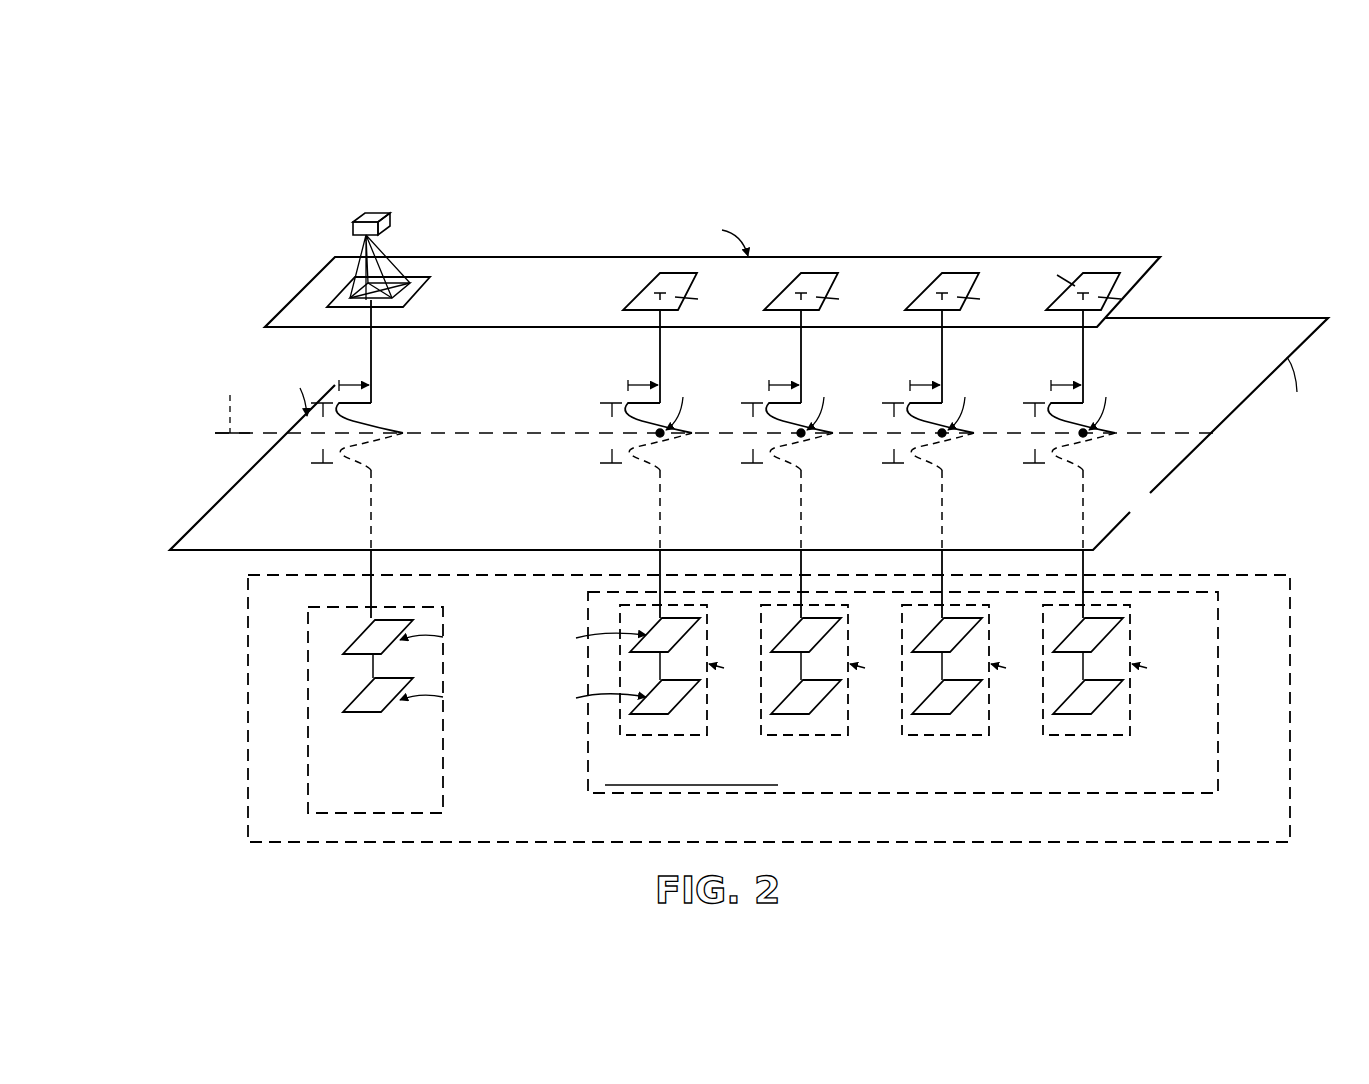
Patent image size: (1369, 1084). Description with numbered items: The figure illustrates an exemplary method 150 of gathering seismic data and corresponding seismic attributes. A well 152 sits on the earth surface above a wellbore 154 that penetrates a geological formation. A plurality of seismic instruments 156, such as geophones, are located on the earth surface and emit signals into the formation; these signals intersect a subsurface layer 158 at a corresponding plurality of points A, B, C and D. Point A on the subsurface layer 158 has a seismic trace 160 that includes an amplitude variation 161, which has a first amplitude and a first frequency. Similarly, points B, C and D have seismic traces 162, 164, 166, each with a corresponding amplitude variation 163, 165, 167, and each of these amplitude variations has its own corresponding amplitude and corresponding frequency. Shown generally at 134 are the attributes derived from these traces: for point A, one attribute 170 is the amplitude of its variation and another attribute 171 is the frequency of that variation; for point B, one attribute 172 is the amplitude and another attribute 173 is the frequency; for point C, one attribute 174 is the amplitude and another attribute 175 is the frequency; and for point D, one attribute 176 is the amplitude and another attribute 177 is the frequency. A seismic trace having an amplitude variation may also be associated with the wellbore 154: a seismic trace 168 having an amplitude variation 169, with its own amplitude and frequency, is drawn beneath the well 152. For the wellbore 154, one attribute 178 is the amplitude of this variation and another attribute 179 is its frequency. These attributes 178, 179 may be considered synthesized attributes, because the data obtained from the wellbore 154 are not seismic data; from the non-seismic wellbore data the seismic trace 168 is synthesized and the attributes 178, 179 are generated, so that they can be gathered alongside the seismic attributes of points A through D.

The method of gathering seismic data and corresponding seismic attributes 150 is at (470, 142).
The well 152 is at (346, 250).
The wellbore 154 is at (372, 338).
The seismic instruments 156 is at (872, 286).
The subsurface layer 158 is at (1147, 432).
The seismic trace 160 is at (665, 536).
The amplitude variation 161 is at (673, 442).
The seismic trace 162 is at (806, 536).
The amplitude variation 163 is at (814, 442).
The seismic trace 164 is at (947, 536).
The amplitude variation 165 is at (955, 442).
The seismic trace 166 is at (1087, 536).
The amplitude variation 167 is at (1096, 442).
The seismic trace 168 is at (376, 536).
The amplitude variation 169 is at (389, 446).
The attribute 170 is at (688, 640).
The attribute 171 is at (688, 700).
The attribute 172 is at (829, 640).
The attribute 173 is at (829, 700).
The attribute 174 is at (970, 640).
The attribute 175 is at (970, 700).
The attribute 176 is at (1111, 640).
The attribute 177 is at (1111, 700).
The attribute 178 is at (356, 637).
The attribute 179 is at (358, 695).
The attributes 134 is at (1222, 638).